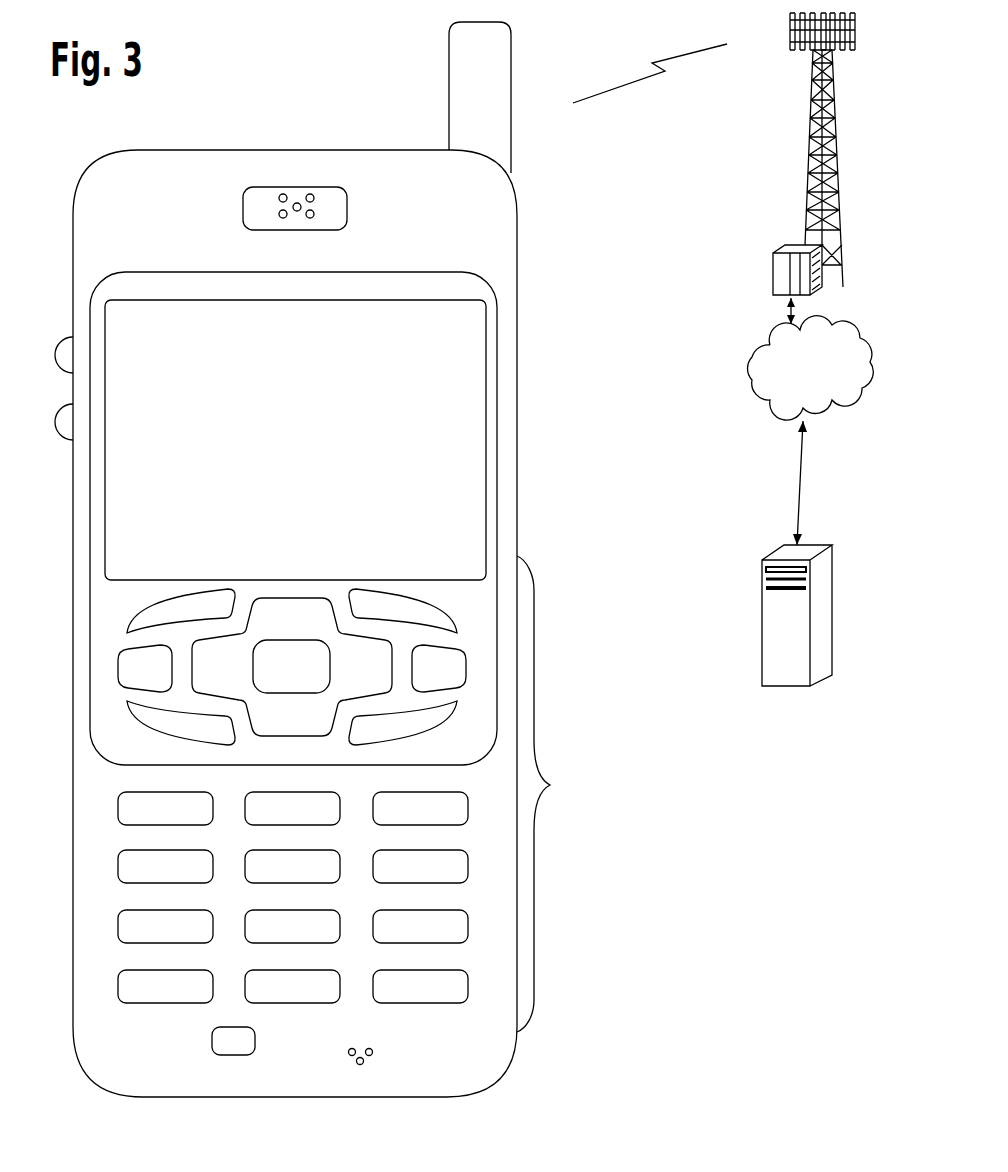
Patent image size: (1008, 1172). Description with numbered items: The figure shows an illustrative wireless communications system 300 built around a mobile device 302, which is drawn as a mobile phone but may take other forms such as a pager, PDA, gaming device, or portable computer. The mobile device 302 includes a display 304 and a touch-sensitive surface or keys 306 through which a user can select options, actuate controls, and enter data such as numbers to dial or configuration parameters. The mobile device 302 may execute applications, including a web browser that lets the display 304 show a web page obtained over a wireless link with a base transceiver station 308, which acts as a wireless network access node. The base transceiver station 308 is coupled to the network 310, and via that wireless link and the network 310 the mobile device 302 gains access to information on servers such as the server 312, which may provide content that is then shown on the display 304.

The wireless communications system 300 is at (250, 40).
The mobile device 302 is at (140, 1097).
The display 304 is at (486, 352).
The keys 306 is at (553, 794).
The base transceiver station 308 is at (800, 167).
The network 310 is at (749, 382).
The server 312 is at (785, 685).